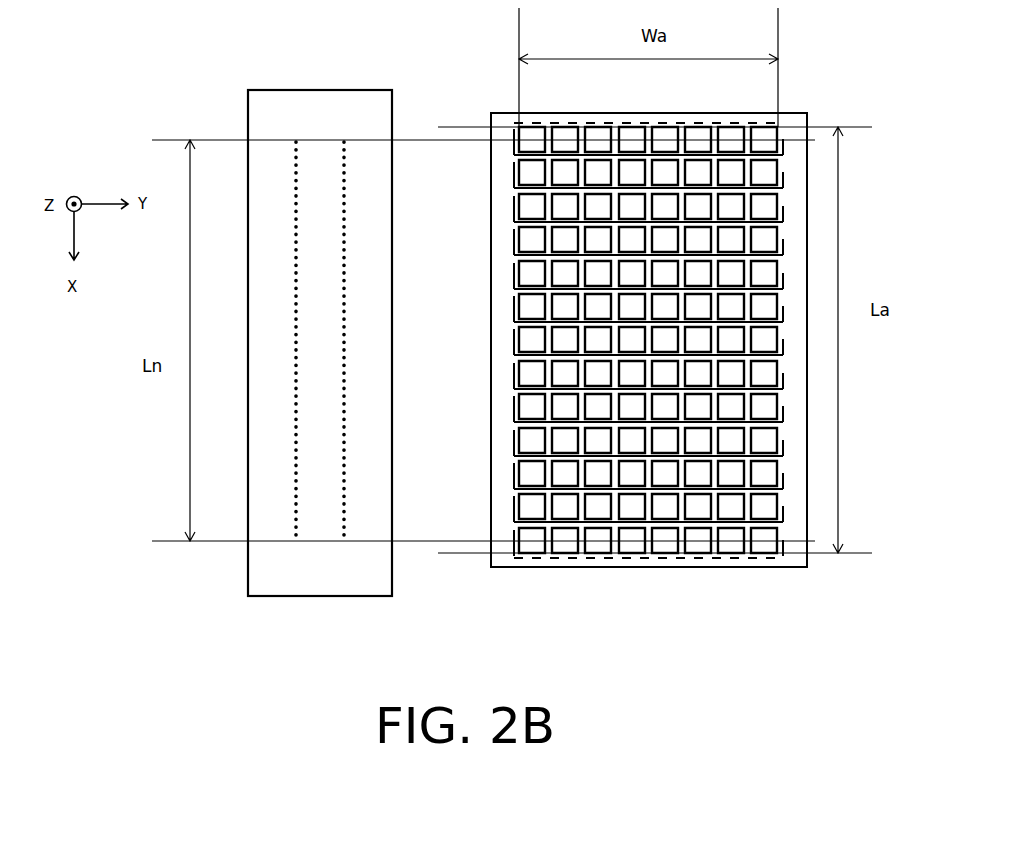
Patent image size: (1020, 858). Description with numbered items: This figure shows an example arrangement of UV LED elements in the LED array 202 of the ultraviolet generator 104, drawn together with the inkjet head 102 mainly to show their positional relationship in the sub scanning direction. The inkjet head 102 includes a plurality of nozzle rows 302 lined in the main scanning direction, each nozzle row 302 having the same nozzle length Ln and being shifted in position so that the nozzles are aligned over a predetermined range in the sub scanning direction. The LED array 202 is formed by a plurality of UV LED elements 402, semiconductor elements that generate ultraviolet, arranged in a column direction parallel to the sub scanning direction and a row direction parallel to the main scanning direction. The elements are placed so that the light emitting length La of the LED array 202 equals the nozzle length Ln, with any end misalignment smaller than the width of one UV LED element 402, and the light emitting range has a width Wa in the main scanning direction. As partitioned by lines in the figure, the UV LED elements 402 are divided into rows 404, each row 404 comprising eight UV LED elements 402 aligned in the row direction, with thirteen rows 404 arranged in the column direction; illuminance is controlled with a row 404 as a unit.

The inkjet head 102 is at (340, 596).
The nozzle row 302 is at (296, 440).
The LED array 202 is at (695, 392).
The ultraviolet generator 104 is at (649, 340).
The UV LED element 402 is at (768, 543).
The row 404 is at (784, 538).